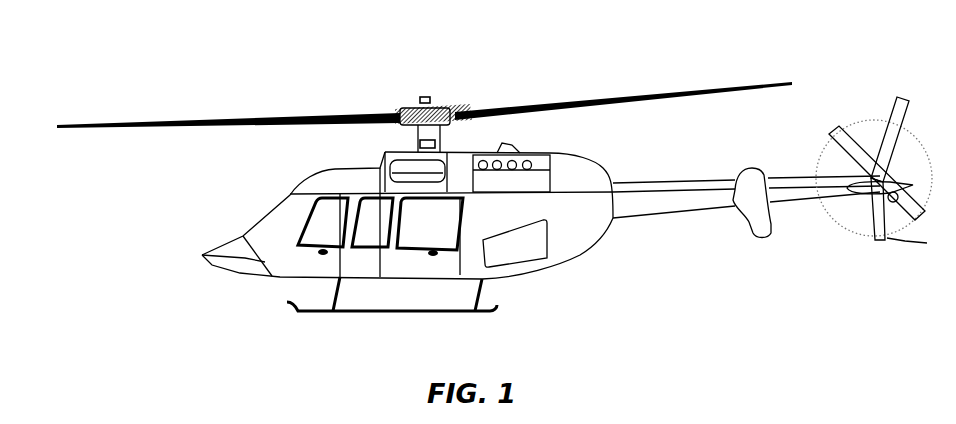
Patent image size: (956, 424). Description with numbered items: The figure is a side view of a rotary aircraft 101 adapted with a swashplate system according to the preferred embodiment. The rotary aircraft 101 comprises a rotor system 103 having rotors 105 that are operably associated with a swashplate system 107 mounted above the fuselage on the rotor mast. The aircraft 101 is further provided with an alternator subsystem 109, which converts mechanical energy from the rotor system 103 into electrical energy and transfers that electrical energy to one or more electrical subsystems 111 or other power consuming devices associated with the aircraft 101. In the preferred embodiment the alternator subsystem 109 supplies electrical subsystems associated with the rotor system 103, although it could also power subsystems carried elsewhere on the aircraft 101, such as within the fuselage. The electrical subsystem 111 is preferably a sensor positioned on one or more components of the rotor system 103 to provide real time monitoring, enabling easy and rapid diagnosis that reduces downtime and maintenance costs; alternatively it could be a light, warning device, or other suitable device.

The rotary aircraft 101 is at (138, 304).
The rotor system 103 is at (366, 82).
The rotors 105 is at (702, 88).
The swashplate system 107 is at (458, 130).
The alternator subsystem 109 is at (418, 144).
The electrical subsystem 111 is at (427, 96).